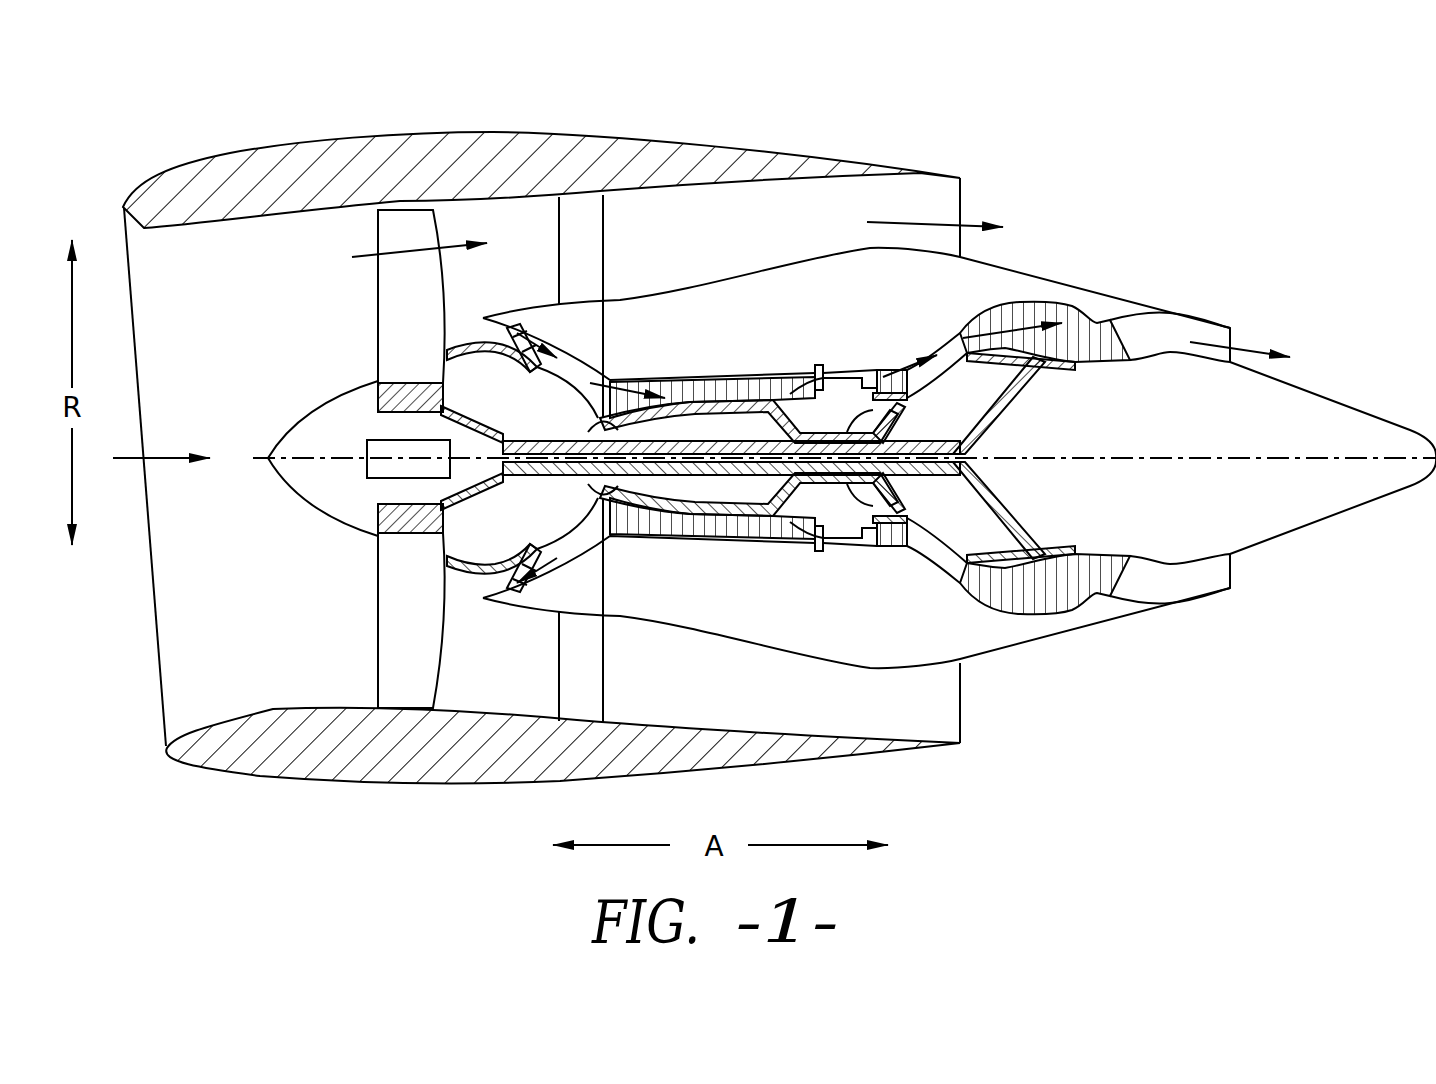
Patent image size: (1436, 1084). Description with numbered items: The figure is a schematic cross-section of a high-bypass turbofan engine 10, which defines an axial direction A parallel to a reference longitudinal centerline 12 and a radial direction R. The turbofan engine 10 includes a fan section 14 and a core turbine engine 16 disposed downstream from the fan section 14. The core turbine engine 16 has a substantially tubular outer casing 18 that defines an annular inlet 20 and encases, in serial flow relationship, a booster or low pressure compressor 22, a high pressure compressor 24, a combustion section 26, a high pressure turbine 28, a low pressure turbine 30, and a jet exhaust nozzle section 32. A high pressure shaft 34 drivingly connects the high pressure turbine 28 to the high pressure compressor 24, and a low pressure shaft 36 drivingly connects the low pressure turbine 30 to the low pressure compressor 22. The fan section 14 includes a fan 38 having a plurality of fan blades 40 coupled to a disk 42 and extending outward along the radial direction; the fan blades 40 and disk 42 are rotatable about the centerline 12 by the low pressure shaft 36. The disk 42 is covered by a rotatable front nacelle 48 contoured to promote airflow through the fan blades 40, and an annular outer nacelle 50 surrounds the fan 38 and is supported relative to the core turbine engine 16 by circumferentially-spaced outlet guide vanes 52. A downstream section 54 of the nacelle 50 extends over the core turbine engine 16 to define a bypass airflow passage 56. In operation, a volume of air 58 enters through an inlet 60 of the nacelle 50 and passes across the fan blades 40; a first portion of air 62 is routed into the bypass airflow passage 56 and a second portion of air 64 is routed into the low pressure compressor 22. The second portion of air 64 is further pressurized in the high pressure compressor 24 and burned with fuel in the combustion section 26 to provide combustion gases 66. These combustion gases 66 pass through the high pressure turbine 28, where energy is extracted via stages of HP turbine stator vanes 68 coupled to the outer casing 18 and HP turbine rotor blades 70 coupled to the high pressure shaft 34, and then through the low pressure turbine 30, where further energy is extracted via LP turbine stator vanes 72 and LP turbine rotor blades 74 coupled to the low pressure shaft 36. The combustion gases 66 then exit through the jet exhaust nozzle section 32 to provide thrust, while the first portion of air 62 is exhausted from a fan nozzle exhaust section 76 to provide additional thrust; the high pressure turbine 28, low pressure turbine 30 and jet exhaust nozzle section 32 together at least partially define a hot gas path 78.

The turbofan engine 10 is at (1226, 203).
The longitudinal centerline 12 is at (1143, 453).
The fan section 14 is at (541, 446).
The core turbine engine 16 is at (778, 330).
The outer casing 18 is at (800, 657).
The annular inlet 20 is at (500, 585).
The low pressure compressor 22 is at (558, 557).
The high pressure compressor 24 is at (637, 534).
The combustion section 26 is at (838, 540).
The high pressure turbine 28 is at (912, 540).
The low pressure turbine 30 is at (1062, 618).
The jet exhaust nozzle section 32 is at (1235, 333).
The high pressure shaft 34 is at (890, 408).
The low pressure shaft 36 is at (560, 435).
The fan 38 is at (355, 297).
The fan blades 40 is at (373, 650).
The disk 42 is at (373, 397).
The rotatable front nacelle 48 is at (300, 427).
The outer nacelle 50 is at (445, 786).
The outlet guide vanes 52 is at (605, 218).
The downstream section of the nacelle 54 is at (769, 142).
The bypass airflow passage 56 is at (722, 237).
The volume of air 58 is at (160, 457).
The inlet 60 is at (158, 693).
The first portion of air 62 is at (393, 247).
The second portion of air 64 is at (467, 330).
The combustion gases 66 is at (1007, 305).
The HP turbine stator vanes 68 is at (883, 550).
The HP turbine rotor blades 70 is at (893, 547).
The LP turbine stator vanes 72 is at (967, 585).
The LP turbine rotor blades 74 is at (980, 593).
The fan nozzle exhaust section 76 is at (960, 190).
The hot gas path 78 is at (950, 340).